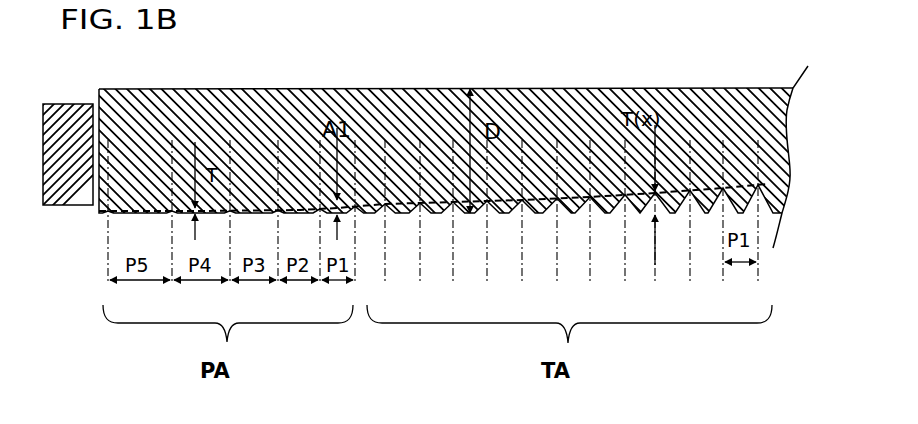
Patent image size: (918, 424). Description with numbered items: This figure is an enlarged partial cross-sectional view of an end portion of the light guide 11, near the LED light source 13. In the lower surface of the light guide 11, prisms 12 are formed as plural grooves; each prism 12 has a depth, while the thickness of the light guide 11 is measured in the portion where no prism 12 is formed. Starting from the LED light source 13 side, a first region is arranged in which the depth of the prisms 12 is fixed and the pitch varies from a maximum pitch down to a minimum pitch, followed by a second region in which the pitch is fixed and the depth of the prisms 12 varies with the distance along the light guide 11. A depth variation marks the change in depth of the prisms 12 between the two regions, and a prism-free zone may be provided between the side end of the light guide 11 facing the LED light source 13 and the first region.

The light guide 11 is at (267, 89).
The prism 12 is at (453, 214).
The LED light source 13 is at (58, 205).